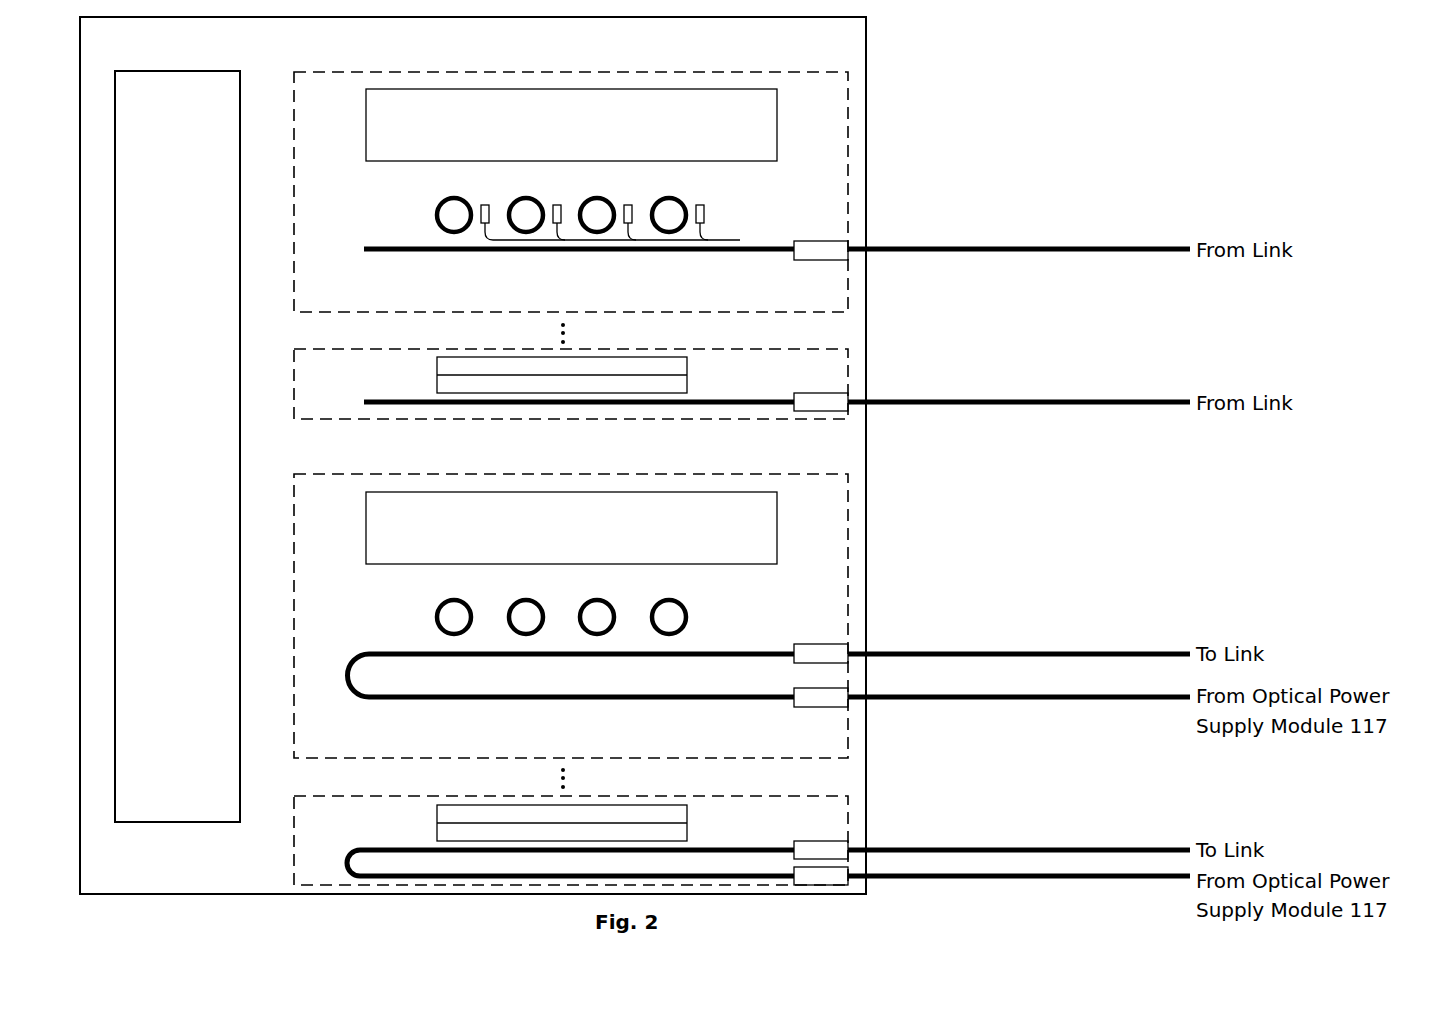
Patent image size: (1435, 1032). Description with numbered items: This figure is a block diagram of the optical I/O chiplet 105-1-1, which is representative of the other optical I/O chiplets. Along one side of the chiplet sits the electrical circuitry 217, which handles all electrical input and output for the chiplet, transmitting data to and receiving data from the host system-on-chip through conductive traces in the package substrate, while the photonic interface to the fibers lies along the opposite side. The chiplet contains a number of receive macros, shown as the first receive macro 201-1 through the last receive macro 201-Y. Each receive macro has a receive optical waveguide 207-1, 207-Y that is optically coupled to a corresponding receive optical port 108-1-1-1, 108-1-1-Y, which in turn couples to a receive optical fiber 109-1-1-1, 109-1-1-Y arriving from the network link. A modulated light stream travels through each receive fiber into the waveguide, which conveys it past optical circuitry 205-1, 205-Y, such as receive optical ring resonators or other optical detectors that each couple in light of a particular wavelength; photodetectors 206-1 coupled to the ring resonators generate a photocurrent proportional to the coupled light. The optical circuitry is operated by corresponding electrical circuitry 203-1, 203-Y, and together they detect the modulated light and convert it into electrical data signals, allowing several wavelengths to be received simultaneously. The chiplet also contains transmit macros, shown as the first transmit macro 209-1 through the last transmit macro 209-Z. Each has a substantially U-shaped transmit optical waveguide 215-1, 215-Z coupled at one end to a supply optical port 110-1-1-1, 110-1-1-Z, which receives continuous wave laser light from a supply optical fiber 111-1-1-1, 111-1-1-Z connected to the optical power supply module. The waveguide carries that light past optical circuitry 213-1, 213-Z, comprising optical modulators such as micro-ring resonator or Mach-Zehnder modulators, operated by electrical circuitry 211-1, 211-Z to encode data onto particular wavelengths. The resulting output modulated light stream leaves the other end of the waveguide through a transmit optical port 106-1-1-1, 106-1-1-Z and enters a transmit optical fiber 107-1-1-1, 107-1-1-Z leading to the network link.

The optical I/O chiplet 105-1-1 is at (866, 71).
The electrical circuitry 217 is at (177, 446).
The receive macro 201-1 is at (402, 72).
The electrical circuitry 203-1 is at (571, 125).
The optical circuitry 205-1 is at (419, 197).
The photodetector 206-1 is at (740, 240).
The receive optical waveguide 207-1 is at (722, 251).
The receive optical port 108-1-1-1 is at (822, 251).
The receive optical fiber 109-1-1-1 is at (1045, 249).
The receive macro 201-Y is at (402, 349).
The electrical circuitry 203-Y is at (562, 372).
The optical circuitry 205-Y is at (562, 382).
The receive optical waveguide 207-Y is at (745, 402).
The receive optical port 108-1-1-Y is at (822, 404).
The receive optical fiber 109-1-1-Y is at (1045, 402).
The transmit macro 209-1 is at (402, 474).
The electrical circuitry 211-1 is at (571, 528).
The optical circuitry 213-1 is at (419, 599).
The transmit optical waveguide 215-1 is at (730, 699).
The transmit optical port 106-1-1-1 is at (822, 652).
The supply optical port 110-1-1-1 is at (822, 699).
The transmit optical fiber 107-1-1-1 is at (1045, 652).
The supply optical fiber 111-1-1-1 is at (1045, 699).
The transmit macro 209-Z is at (402, 796).
The electrical circuitry 211-Z is at (562, 820).
The optical circuitry 213-Z is at (562, 830).
The transmit optical waveguide 215-Z is at (722, 850).
The transmit optical port 106-1-1-Z is at (822, 848).
The supply optical port 110-1-1-Z is at (822, 878).
The transmit optical fiber 107-1-1-Z is at (1045, 848).
The supply optical fiber 111-1-1-Z is at (1045, 878).